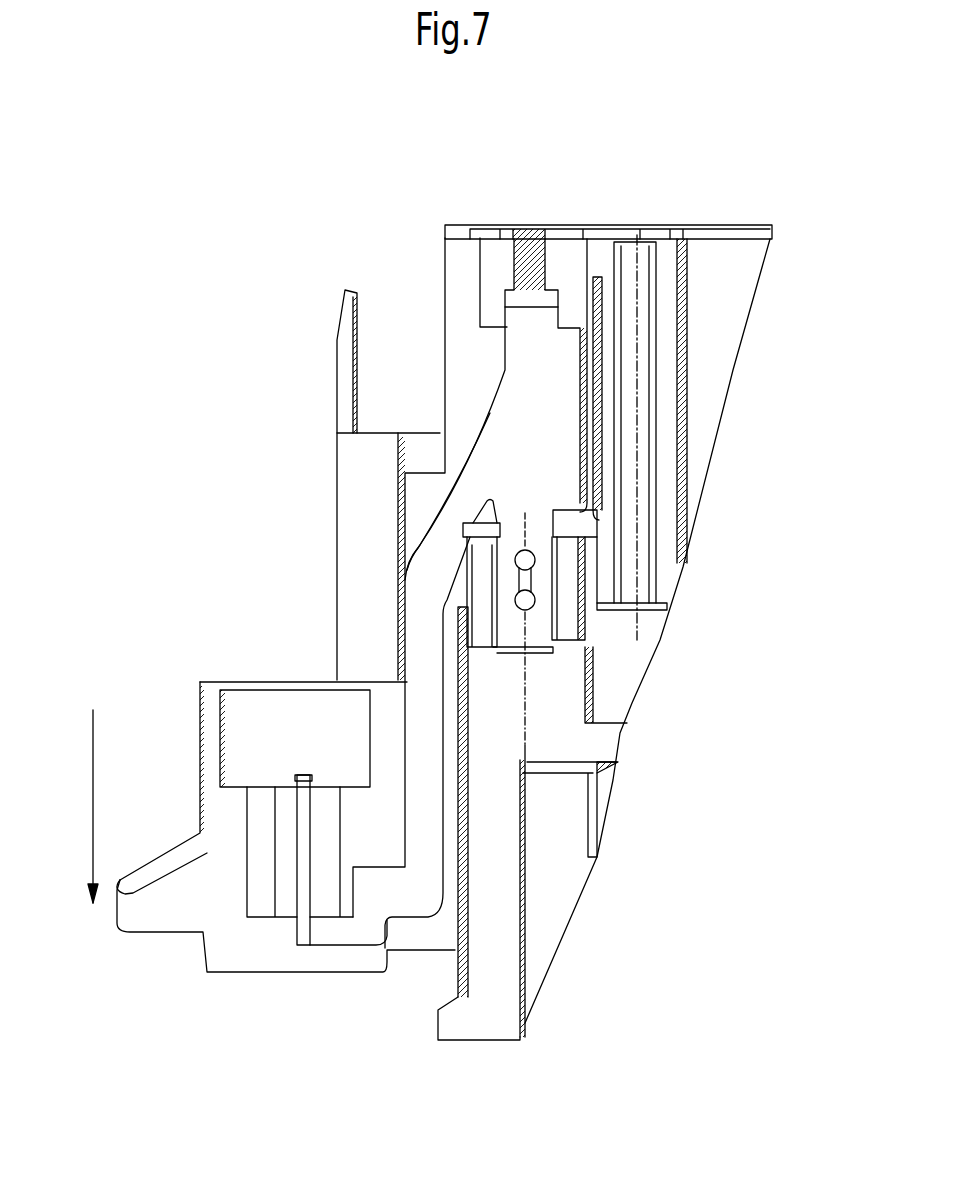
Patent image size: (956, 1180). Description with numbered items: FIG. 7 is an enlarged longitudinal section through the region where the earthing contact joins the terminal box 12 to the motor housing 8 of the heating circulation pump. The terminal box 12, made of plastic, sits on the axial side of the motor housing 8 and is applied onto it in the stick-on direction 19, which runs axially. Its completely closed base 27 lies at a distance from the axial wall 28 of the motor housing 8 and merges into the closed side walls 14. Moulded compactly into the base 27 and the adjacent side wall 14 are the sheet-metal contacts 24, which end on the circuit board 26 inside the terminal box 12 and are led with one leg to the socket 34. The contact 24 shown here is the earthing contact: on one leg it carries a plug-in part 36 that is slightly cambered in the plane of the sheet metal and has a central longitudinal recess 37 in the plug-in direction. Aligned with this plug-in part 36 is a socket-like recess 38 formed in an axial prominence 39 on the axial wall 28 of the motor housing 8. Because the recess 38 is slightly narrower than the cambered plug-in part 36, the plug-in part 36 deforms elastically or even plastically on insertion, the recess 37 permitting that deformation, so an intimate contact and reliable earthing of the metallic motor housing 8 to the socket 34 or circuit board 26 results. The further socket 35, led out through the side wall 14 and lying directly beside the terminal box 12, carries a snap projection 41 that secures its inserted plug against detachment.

The motor housing 8 is at (477, 968).
The terminal box 12 is at (300, 550).
The side walls 14 is at (730, 303).
The stick-on direction 19 is at (93, 813).
The contacts 24 is at (497, 443).
The circuit board 26 is at (575, 232).
The base 27 is at (653, 620).
The axial wall 28 is at (610, 738).
The socket 34 is at (312, 756).
The socket 35 is at (385, 495).
The plug-in part 36 is at (578, 641).
The central longitudinal recess 37 is at (513, 560).
The socket-like recess 38 is at (540, 623).
The axial prominence 39 is at (483, 610).
The snap projection 41 is at (347, 330).